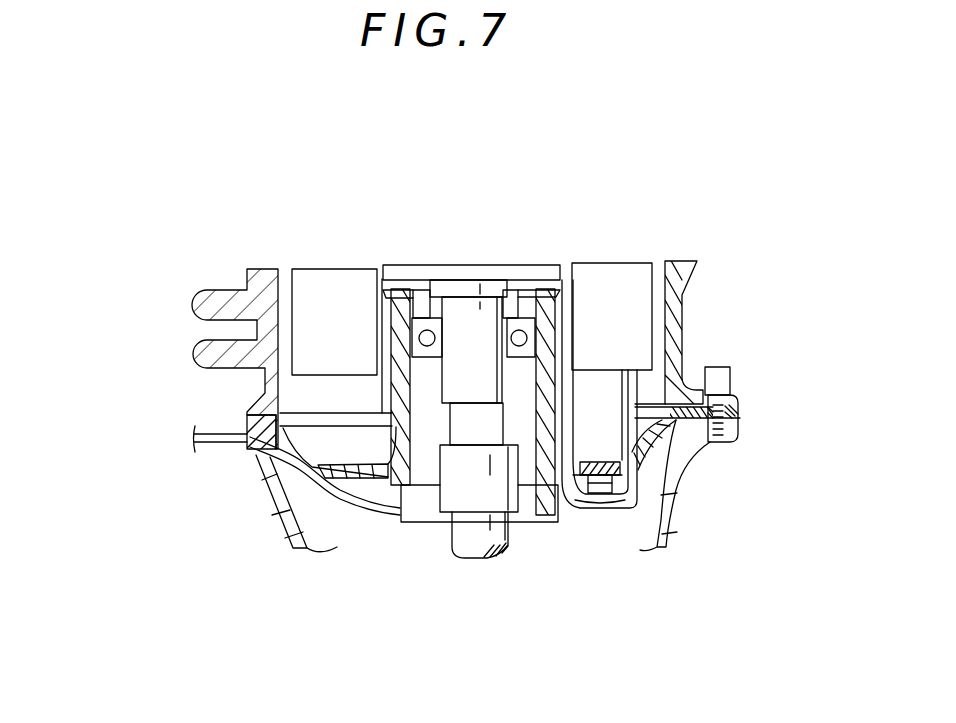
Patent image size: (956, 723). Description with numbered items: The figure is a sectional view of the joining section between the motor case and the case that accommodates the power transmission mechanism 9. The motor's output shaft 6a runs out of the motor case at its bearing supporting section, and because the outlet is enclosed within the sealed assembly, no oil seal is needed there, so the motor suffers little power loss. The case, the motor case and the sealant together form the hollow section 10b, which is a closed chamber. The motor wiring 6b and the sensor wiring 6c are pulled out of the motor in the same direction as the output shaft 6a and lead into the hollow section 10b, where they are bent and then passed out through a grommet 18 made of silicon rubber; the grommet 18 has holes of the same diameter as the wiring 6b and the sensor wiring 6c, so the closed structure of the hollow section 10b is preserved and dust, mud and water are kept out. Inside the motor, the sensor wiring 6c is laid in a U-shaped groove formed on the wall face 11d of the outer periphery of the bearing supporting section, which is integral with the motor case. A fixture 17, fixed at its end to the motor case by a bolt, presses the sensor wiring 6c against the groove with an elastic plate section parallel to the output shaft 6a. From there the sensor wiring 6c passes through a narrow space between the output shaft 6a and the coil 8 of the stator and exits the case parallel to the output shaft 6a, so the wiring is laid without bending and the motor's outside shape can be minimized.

The coil 8 is at (250, 270).
The power transmission mechanism 9 is at (248, 495).
The wall face 11d is at (540, 322).
The output shaft 6a is at (462, 365).
The wiring 6b is at (637, 388).
The sensor wiring 6c is at (582, 510).
The fixture 17 is at (608, 510).
The grommet 18 is at (247, 433).
The hollow section 10b is at (323, 510).